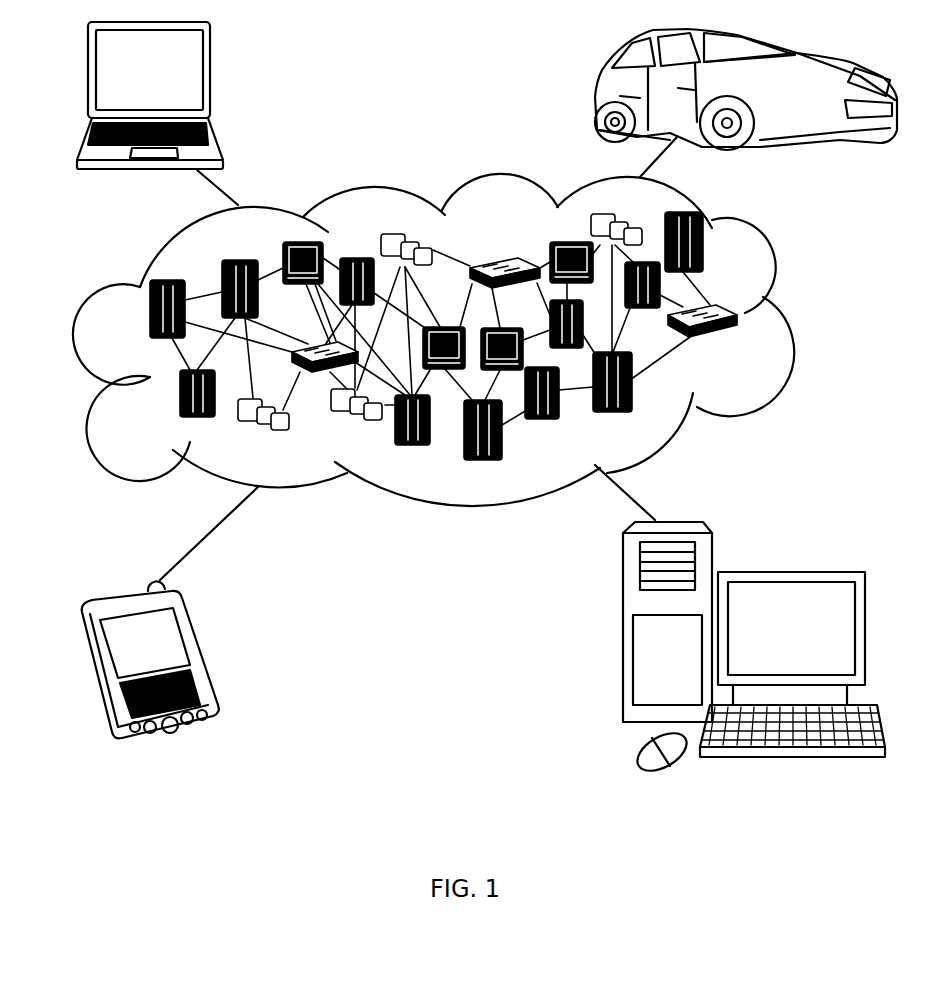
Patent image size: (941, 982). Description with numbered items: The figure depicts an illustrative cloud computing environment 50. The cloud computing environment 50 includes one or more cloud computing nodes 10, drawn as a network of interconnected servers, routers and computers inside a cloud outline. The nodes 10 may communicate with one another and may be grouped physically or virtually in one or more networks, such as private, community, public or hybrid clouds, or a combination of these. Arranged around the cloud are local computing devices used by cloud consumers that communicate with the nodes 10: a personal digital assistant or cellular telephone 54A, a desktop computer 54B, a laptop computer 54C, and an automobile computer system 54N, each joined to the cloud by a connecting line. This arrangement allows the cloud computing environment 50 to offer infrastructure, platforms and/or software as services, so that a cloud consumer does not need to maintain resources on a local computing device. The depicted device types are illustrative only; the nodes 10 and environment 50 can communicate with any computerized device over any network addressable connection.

The cloud computing nodes 10 is at (742, 346).
The cloud computing environment 50 is at (793, 320).
The personal digital assistant (PDA) or cellular telephone 54A is at (202, 656).
The desktop computer 54B is at (790, 572).
The laptop computer 54C is at (213, 80).
The automobile computer system 54N is at (600, 96).